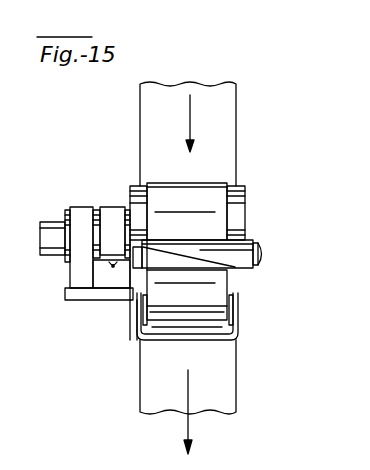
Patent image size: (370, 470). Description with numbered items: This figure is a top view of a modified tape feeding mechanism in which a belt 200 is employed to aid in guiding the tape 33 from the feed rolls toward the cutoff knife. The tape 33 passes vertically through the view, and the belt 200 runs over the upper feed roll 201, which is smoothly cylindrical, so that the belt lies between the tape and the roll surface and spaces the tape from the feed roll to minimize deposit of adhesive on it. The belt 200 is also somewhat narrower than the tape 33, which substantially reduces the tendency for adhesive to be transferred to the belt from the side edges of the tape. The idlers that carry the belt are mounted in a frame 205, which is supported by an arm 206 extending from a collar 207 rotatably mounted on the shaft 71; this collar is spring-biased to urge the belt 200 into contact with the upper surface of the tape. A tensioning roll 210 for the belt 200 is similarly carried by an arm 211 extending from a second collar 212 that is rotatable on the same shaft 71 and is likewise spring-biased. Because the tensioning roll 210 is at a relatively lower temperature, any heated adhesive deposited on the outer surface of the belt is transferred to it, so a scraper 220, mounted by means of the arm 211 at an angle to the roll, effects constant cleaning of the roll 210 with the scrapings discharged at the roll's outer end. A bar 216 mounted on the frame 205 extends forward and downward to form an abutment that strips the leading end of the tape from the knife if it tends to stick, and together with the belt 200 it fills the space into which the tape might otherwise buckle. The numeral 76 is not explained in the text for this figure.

The tape 33 is at (225, 107).
The shaft 71 is at (52, 245).
The frame 76 is at (0, 291).
The belt 200 is at (225, 222).
The upper feed roll 201 is at (243, 193).
The frame 205 is at (232, 307).
The arm 206 is at (115, 292).
The collar 207 is at (67, 208).
The tensioning roll 210 is at (245, 245).
The arm 211 is at (93, 243).
The collar 212 is at (100, 208).
The bar 216 is at (210, 333).
The scraper 220 is at (250, 270).